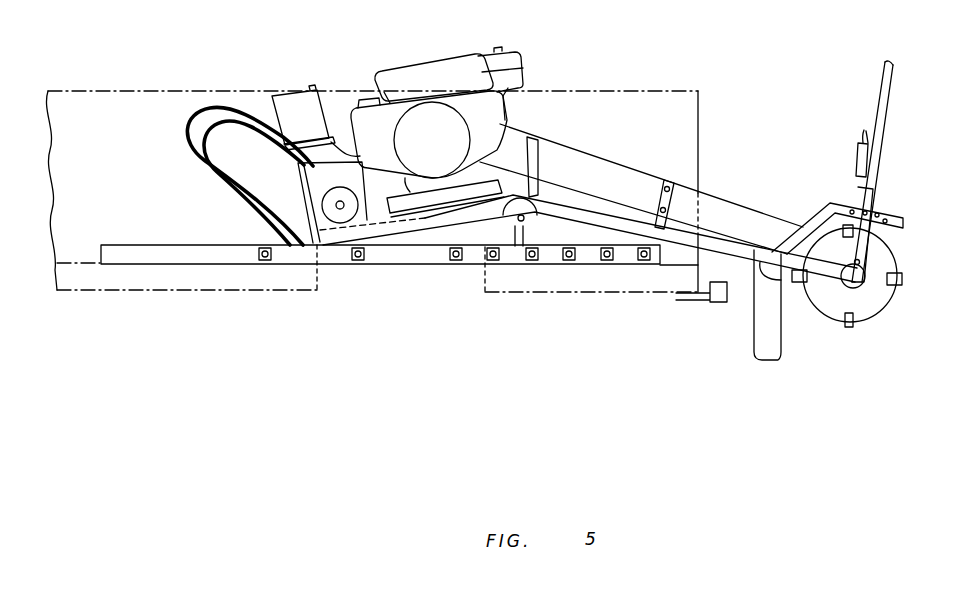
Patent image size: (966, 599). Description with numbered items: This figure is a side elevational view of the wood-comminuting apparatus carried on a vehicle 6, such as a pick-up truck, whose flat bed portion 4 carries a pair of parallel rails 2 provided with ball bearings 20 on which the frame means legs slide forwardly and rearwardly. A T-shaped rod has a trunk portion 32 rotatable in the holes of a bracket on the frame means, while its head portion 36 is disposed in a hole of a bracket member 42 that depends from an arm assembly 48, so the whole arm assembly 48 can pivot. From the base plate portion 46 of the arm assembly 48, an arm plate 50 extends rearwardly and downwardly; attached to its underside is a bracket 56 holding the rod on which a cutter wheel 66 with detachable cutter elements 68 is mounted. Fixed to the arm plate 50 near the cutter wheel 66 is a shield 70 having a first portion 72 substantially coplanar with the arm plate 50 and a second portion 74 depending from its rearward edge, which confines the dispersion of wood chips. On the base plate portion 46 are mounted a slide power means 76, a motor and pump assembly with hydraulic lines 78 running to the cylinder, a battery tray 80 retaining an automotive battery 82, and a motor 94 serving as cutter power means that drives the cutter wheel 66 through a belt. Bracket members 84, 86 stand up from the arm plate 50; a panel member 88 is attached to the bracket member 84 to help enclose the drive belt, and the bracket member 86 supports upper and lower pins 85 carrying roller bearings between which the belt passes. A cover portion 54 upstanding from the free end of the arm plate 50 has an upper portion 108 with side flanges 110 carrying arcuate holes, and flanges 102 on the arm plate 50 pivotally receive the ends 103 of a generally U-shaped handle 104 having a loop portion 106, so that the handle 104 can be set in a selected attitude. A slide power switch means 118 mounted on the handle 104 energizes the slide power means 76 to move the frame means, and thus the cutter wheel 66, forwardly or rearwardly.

The parallel rails 2 is at (143, 246).
The flat bed portion 4 is at (58, 268).
The vehicle 6 is at (133, 91).
The ball bearings 20 is at (358, 263).
The trunk portion 32 is at (525, 233).
The head portion 36 is at (467, 226).
The bracket member 42 is at (537, 214).
The base plate portion 46 is at (407, 278).
The arm assembly 48 is at (530, 198).
The arm plate 50 is at (676, 240).
The cover portion 54 is at (817, 218).
The bracket 56 is at (860, 280).
The cutter wheel 66 is at (875, 308).
The cutter elements 68 is at (903, 279).
The shield 70 is at (754, 318).
The first portion 72 is at (795, 262).
The second portion 74 is at (757, 334).
The slide power means 76 is at (313, 190).
The hydraulic lines 78 is at (190, 138).
The battery tray 80 is at (312, 153).
The automotive battery 82 is at (293, 97).
The bracket member 84 is at (536, 152).
The pins 85 is at (661, 195).
The bracket member 86 is at (678, 200).
The panel member 88 is at (730, 205).
The motor 94 is at (428, 70).
The flanges 102 is at (862, 262).
The handle ends 103 is at (862, 243).
The handle 104 is at (887, 110).
The loop portion 106 is at (892, 65).
The upper portion 108 is at (880, 213).
The side flanges 110 is at (905, 223).
The slide power switch means 118 is at (858, 157).